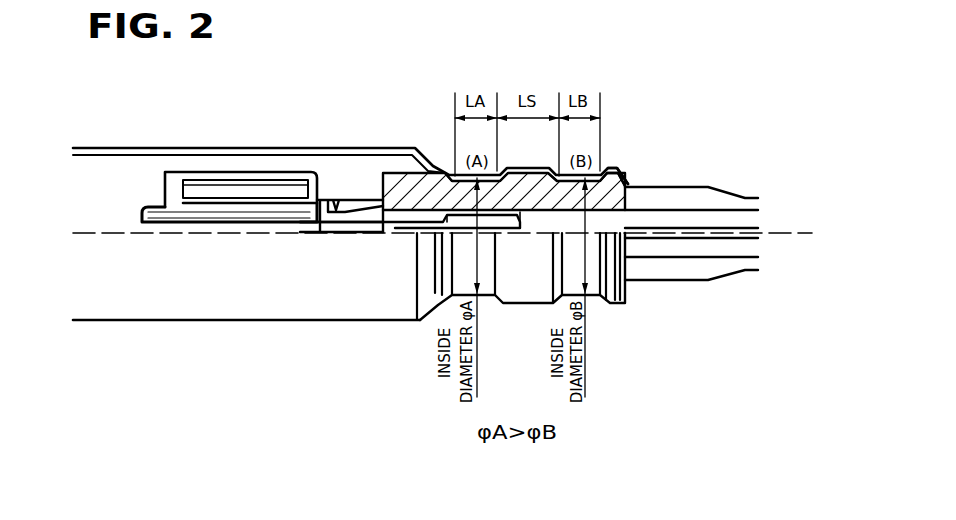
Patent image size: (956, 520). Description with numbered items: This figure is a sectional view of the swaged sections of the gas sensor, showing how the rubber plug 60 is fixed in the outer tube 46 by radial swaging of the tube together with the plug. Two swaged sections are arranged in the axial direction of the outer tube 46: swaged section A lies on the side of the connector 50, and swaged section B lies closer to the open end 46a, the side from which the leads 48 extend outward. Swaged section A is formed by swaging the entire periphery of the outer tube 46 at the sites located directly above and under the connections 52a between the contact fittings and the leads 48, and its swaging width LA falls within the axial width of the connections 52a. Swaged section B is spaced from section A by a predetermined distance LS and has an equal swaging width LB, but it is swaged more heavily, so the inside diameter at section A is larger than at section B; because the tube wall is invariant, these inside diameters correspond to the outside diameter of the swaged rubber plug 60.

The outer tube 46 is at (198, 148).
The open end 46a is at (638, 182).
The leads 48 is at (645, 220).
The connector 50 is at (266, 163).
The connections 52a is at (503, 222).
The rubber plug 60 is at (394, 192).